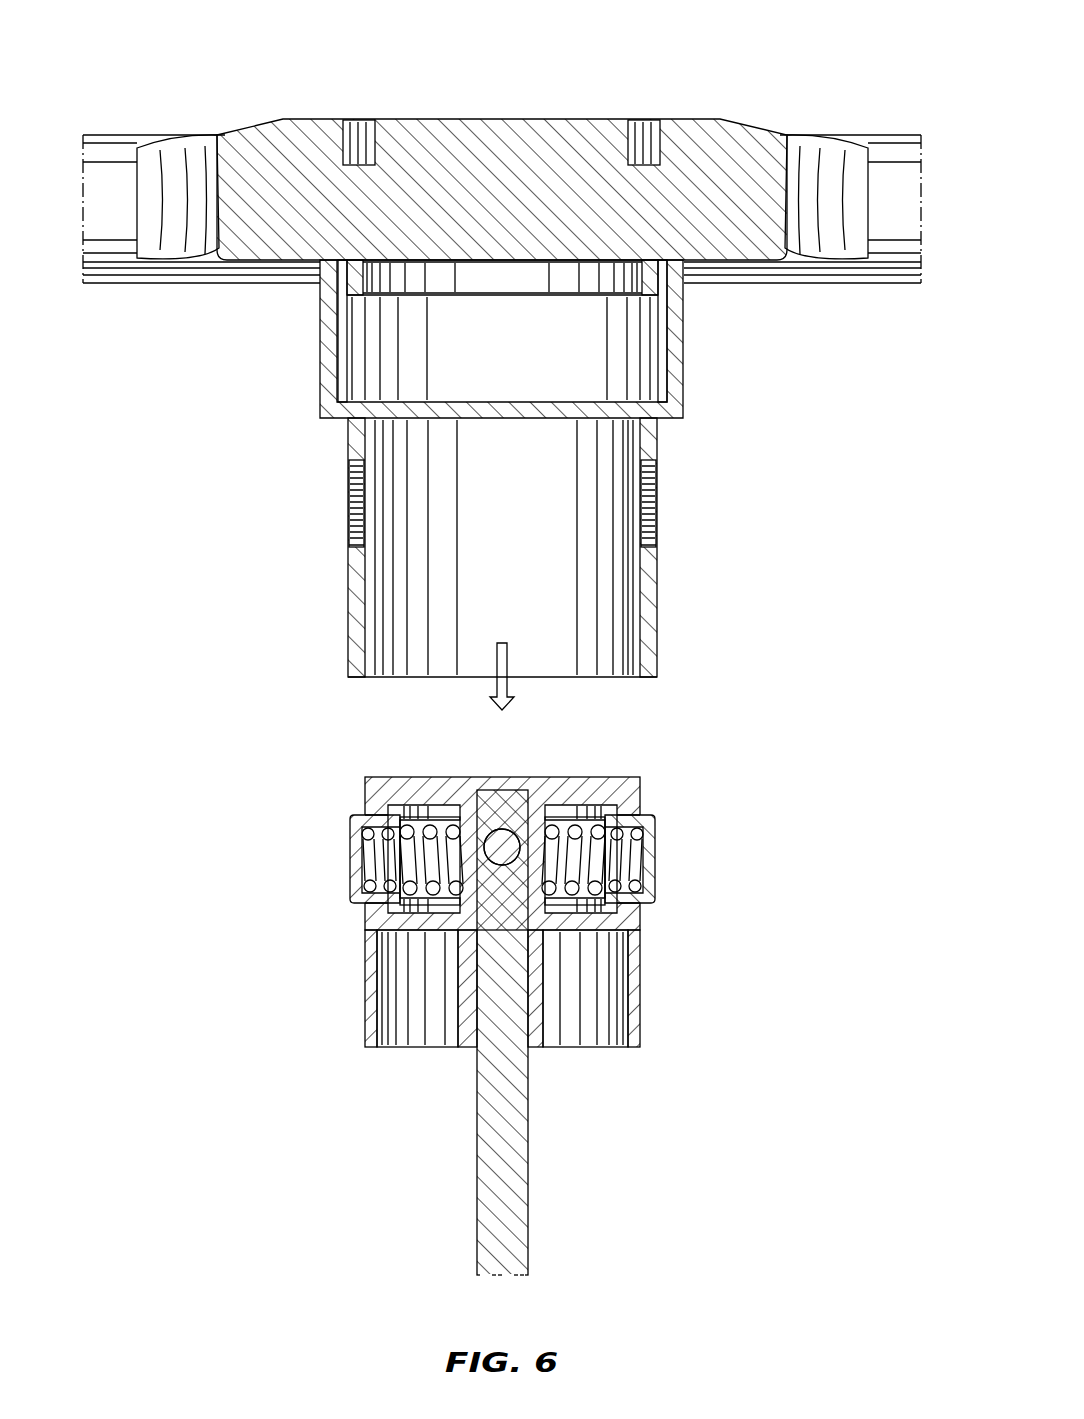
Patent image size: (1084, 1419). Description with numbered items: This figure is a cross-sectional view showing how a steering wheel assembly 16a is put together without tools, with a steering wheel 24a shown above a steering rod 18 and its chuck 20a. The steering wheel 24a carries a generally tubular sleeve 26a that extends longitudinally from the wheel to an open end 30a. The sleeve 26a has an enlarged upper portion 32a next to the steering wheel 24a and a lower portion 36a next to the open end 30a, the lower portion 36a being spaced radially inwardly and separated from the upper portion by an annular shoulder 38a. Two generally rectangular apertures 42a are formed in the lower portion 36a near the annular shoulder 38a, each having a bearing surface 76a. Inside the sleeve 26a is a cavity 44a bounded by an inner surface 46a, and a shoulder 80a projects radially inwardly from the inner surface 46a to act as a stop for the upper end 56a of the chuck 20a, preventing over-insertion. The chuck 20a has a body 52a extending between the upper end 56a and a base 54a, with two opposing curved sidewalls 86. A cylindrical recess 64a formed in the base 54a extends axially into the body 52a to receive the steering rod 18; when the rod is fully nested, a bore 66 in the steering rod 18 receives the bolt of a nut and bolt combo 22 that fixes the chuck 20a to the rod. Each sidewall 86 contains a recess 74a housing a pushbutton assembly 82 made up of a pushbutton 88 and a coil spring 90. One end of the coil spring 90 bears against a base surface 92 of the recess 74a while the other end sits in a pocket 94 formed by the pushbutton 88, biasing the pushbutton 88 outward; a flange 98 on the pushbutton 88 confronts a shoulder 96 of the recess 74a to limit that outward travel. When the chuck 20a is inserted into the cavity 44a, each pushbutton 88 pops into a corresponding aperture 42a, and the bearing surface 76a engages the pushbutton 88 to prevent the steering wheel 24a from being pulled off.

The steering wheel assembly 16a is at (130, 66).
The steering wheel 24a is at (507, 118).
The enlarged upper portion 32a is at (688, 346).
The annular shoulder 38a is at (332, 420).
The shoulder 80a is at (548, 420).
The sleeve 26a is at (459, 561).
The apertures 42a is at (356, 518).
The bearing surface 76a is at (355, 540).
The cavity 44a is at (542, 516).
The inner surface 46a is at (530, 584).
The lower portion 36a is at (658, 604).
The open end 30a is at (650, 678).
The chuck 20a is at (458, 994).
The body 52a is at (494, 940).
The upper end 56a is at (505, 999).
The bore 66 is at (512, 830).
The nut and bolt combo 22 is at (503, 866).
The coil spring 90 is at (445, 830).
The base surface 92 is at (437, 830).
The recess 74a is at (410, 810).
The flange 98 is at (390, 816).
The pushbutton assembly 82 is at (346, 840).
The pushbutton 88 is at (372, 860).
The pocket 94 is at (438, 914).
The shoulder 96 is at (408, 932).
The curved sidewalls 86 is at (364, 1010).
The cylindrical recess 64a is at (475, 1050).
The base 54a is at (583, 1048).
The steering rod 18 is at (483, 999).